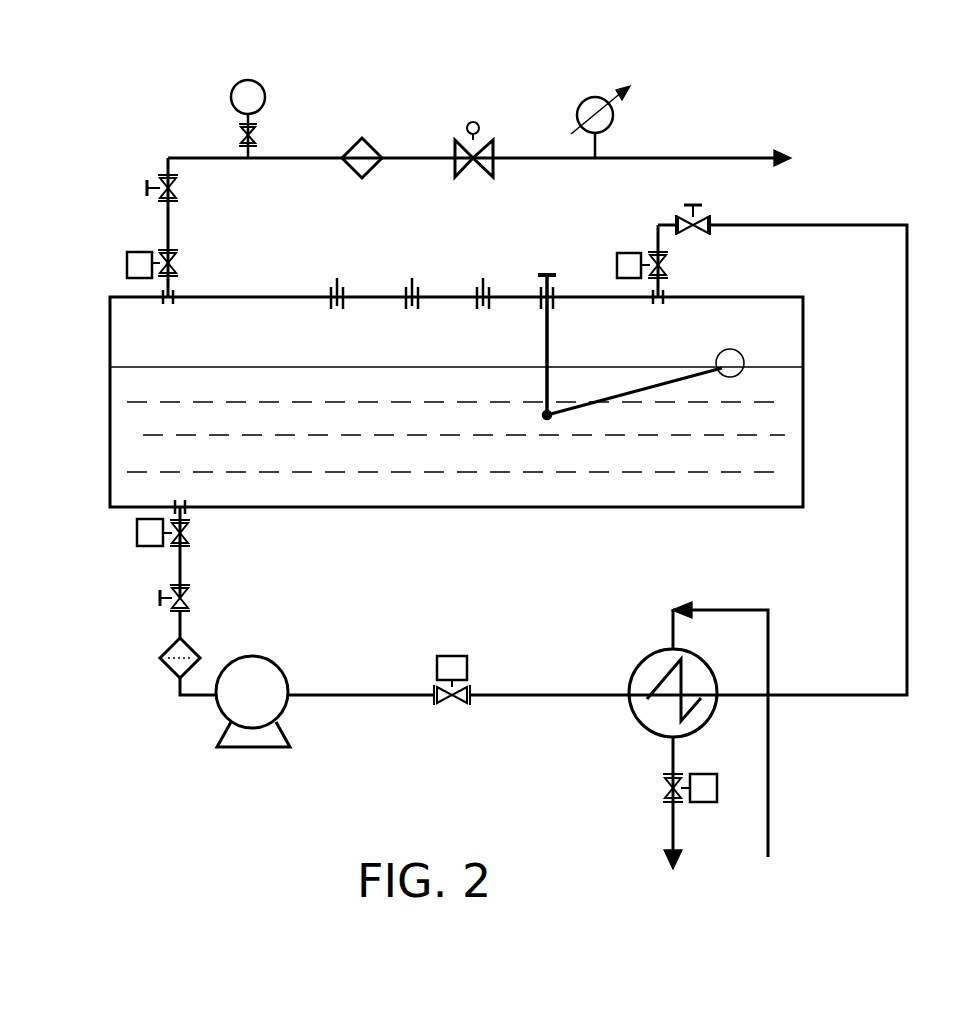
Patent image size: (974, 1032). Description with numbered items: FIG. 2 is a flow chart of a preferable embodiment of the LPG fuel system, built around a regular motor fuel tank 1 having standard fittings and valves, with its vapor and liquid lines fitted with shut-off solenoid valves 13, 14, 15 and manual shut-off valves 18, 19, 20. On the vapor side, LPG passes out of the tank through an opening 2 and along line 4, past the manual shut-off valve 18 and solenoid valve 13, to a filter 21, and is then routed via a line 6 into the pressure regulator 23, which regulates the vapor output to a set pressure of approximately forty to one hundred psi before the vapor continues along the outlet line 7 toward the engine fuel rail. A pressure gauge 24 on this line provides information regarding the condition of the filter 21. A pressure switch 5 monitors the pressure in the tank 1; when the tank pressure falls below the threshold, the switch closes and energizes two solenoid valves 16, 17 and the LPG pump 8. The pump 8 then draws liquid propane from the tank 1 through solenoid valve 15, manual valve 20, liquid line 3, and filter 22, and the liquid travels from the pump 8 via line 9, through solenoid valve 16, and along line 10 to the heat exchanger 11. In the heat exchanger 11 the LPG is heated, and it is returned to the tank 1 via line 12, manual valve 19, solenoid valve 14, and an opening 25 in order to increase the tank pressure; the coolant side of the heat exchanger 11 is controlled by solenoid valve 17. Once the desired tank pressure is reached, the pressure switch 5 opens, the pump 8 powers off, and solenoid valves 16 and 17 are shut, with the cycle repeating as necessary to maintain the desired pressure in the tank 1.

The motor fuel tank 1 is at (805, 401).
The opening 2 is at (165, 305).
The liquid line 3 is at (178, 497).
The line 4 is at (182, 153).
The pressure switch 5 is at (230, 95).
The line 6 is at (267, 155).
The vapor line to engine fuel rail 7 is at (725, 157).
The LPG pump 8 is at (250, 695).
The line 9 is at (362, 700).
The line 10 is at (575, 700).
The heat exchanger 11 is at (665, 712).
The line 12 is at (905, 570).
The shut-off solenoid valve 13 is at (127, 265).
The shut-off solenoid valve 14 is at (640, 230).
The shut-off solenoid valve 15 is at (137, 540).
The solenoid valve 16 is at (452, 710).
The solenoid valve 17 is at (725, 786).
The manual shut-off valve 18 is at (147, 190).
The manual shut-off valve 19 is at (712, 228).
The manual shut-off valve 20 is at (160, 598).
The filter 21 is at (367, 137).
The filter 22 is at (160, 660).
The pressure regulator 23 is at (476, 120).
The pressure gauge 24 is at (592, 100).
The opening 25 is at (660, 305).